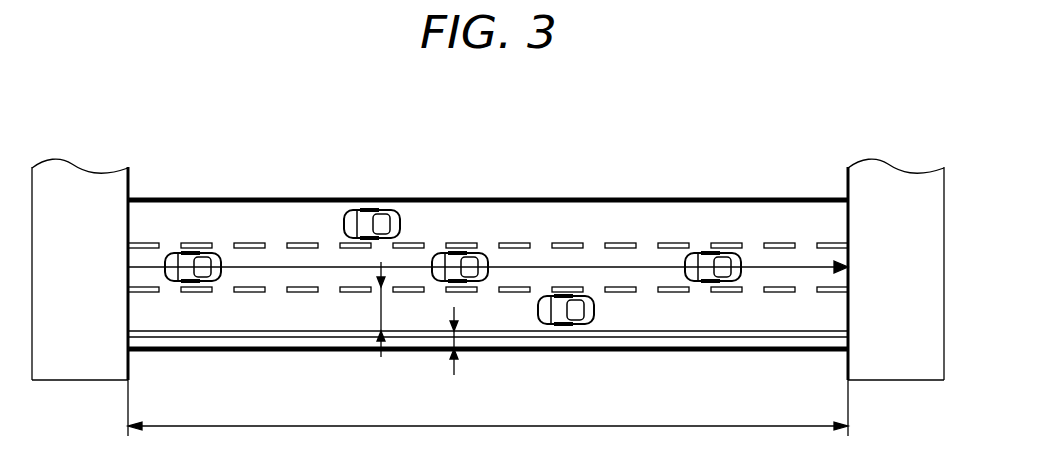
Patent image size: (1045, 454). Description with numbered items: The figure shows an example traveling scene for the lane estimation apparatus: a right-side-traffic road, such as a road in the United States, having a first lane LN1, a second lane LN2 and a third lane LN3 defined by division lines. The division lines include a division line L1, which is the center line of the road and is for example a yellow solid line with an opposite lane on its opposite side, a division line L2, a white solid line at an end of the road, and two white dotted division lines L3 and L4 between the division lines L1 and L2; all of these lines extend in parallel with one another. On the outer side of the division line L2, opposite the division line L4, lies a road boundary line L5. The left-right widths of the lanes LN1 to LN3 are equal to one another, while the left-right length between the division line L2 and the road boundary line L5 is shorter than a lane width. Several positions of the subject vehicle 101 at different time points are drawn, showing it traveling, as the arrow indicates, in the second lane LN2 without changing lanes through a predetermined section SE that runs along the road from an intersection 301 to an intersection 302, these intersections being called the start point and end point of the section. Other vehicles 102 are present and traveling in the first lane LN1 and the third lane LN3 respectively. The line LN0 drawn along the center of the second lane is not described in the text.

The intersection 301 is at (82, 174).
The intersection 302 is at (882, 172).
The subject vehicle 101 is at (193, 252).
The other vehicle 102 is at (382, 209).
The division line L1 is at (805, 197).
The division line L2 is at (682, 337).
The division line L3 is at (619, 240).
The division line L4 is at (620, 293).
The road boundary line L5 is at (765, 351).
The center line LN0 is at (442, 197).
The first lane LN1 is at (308, 315).
The second lane LN2 is at (322, 257).
The third lane LN3 is at (248, 218).
The predetermined section SE is at (488, 408).